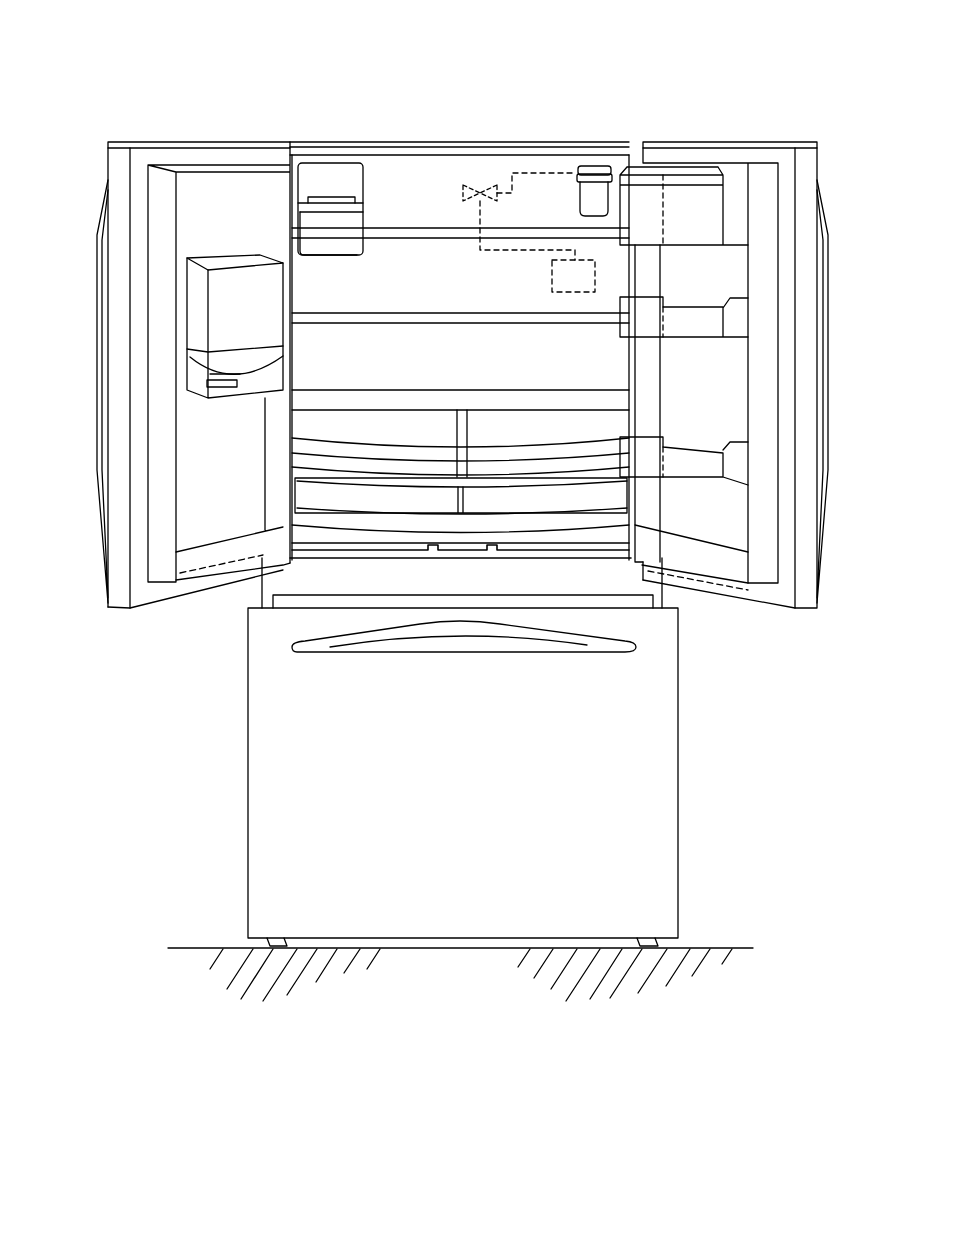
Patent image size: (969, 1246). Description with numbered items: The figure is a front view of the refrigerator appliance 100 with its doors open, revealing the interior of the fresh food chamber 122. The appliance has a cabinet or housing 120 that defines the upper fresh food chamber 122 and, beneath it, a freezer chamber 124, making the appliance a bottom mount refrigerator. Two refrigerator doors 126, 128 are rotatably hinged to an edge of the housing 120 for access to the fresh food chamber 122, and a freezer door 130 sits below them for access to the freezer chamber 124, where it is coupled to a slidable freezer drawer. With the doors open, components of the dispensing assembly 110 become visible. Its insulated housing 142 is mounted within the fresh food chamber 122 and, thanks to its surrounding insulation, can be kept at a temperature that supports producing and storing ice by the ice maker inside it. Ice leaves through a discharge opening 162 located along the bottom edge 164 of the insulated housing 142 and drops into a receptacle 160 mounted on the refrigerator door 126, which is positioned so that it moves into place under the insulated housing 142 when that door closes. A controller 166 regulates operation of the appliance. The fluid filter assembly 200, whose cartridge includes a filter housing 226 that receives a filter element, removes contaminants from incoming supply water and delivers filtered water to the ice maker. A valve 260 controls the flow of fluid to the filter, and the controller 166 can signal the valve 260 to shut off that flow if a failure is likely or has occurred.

The refrigerator appliance 100 is at (680, 90).
The dispensing assembly 110 is at (278, 211).
The housing 120 is at (245, 847).
The fresh food chamber 122 is at (418, 190).
The freezer chamber 124 is at (640, 722).
The refrigerator door 126 is at (158, 143).
The refrigerator door 128 is at (722, 143).
The freezer door 130 is at (640, 822).
The insulated housing 142 is at (332, 183).
The receptacle 160 is at (233, 287).
The discharge opening 162 is at (333, 257).
The bottom edge 164 is at (328, 256).
The controller 166 is at (552, 273).
The fluid filter assembly 200 is at (574, 191).
The filter housing 226 is at (591, 165).
The valve 260 is at (477, 184).